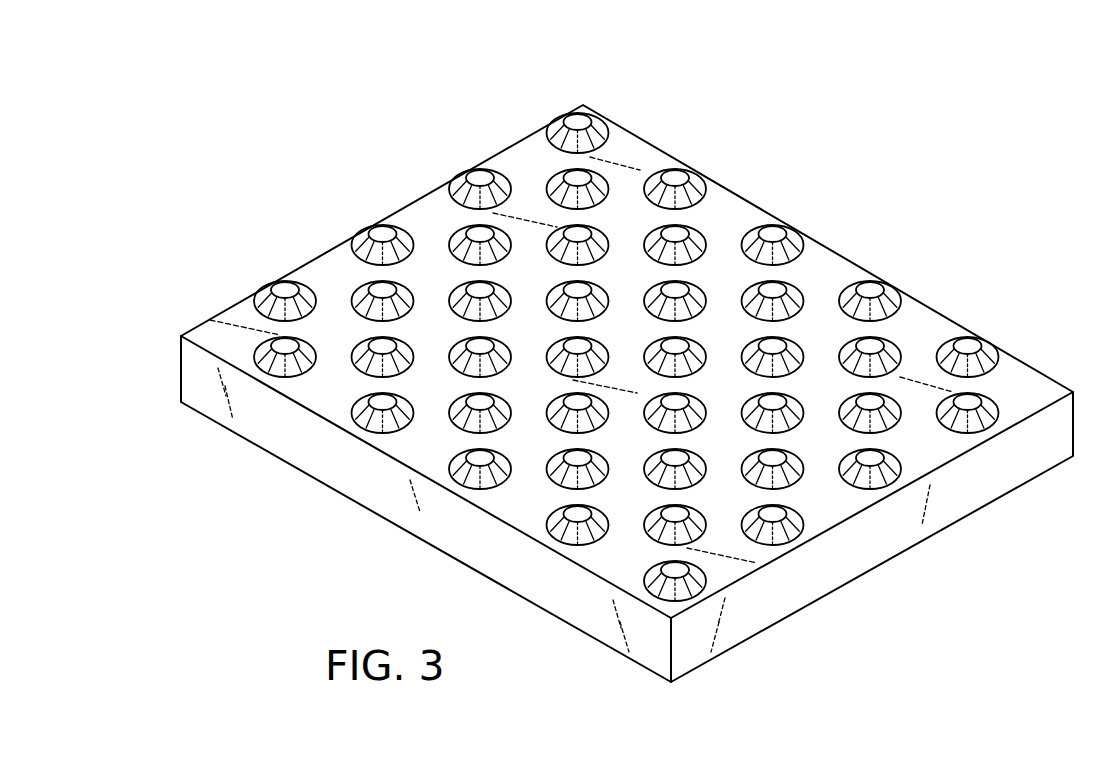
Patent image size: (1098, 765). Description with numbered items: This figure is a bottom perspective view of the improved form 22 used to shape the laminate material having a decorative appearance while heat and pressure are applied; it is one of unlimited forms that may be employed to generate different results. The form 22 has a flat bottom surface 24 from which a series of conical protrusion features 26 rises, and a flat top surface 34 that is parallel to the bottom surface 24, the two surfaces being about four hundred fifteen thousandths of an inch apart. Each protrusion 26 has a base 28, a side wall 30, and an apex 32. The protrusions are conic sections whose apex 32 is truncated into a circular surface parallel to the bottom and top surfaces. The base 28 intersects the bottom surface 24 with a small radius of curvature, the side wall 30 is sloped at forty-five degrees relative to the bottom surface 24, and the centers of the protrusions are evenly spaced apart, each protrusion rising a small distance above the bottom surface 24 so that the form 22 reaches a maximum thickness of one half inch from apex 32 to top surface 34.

The form 22 is at (442, 182).
The flat bottom surface 24 is at (648, 173).
The conical protrusion features 26 is at (607, 118).
The base 28 is at (545, 137).
The side wall 30 is at (595, 127).
The apex 32 is at (577, 120).
The flat top surface 34 is at (372, 512).